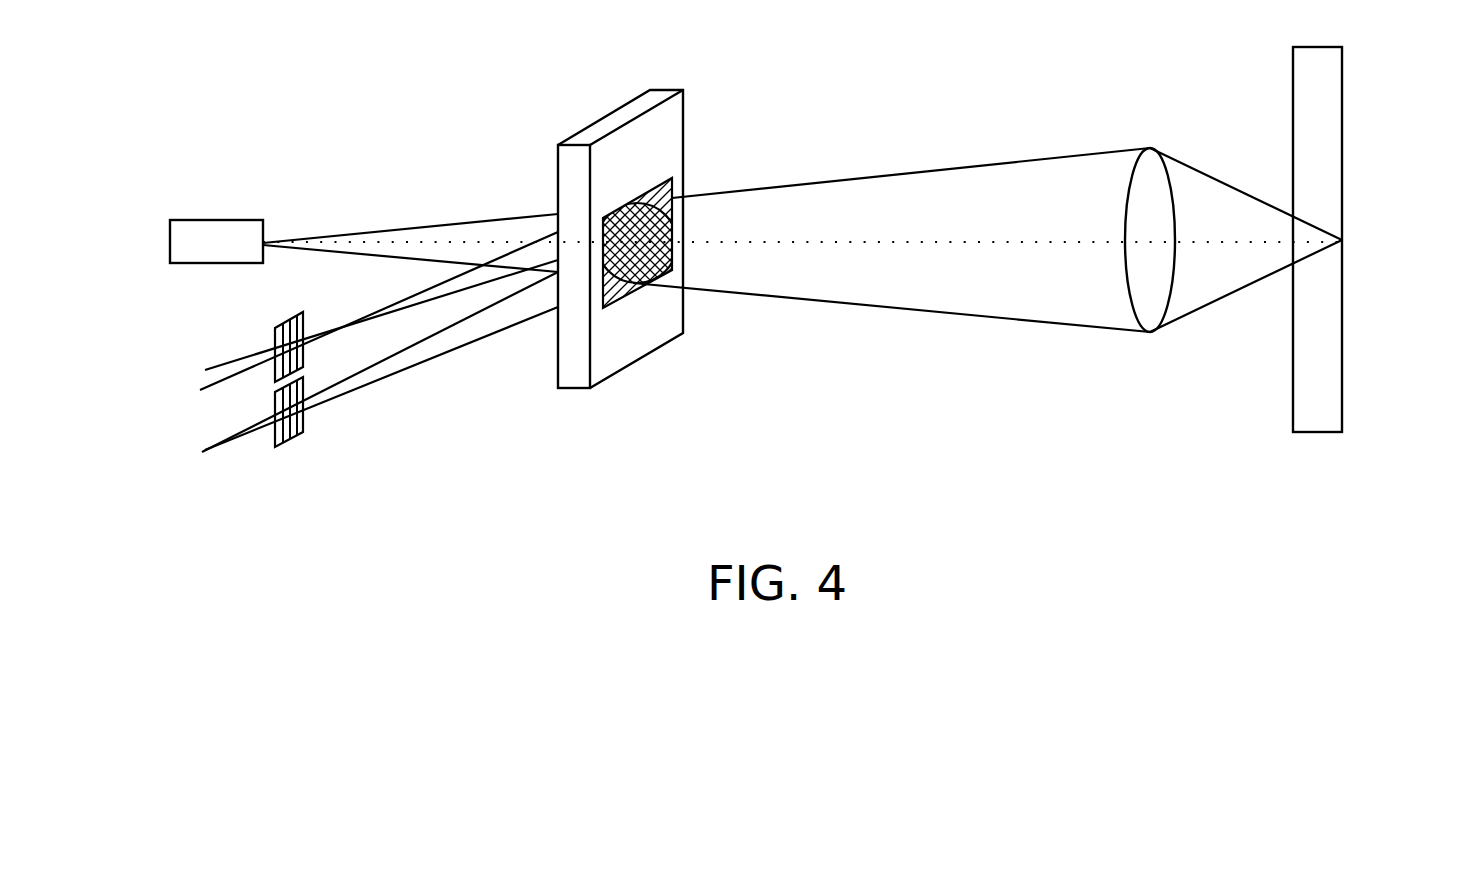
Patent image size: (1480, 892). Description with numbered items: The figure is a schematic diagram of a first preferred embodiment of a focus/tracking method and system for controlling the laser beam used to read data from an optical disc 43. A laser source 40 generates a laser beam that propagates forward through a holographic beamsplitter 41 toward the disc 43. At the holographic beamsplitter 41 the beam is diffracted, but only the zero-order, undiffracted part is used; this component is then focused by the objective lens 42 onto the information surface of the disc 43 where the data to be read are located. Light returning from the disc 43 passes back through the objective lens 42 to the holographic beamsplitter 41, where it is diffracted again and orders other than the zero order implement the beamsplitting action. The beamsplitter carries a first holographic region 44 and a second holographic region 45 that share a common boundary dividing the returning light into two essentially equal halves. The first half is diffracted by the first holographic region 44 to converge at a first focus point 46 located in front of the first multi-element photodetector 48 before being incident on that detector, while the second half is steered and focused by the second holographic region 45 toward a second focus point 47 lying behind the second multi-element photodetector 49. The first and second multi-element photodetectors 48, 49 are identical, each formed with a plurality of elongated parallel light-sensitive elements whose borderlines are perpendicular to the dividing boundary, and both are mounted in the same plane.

The laser source 40 is at (220, 220).
The holographic beamsplitter 41 is at (652, 125).
The objective lens 42 is at (1168, 173).
The optical disc 43 is at (1342, 88).
The first holographic region 44 is at (667, 187).
The second holographic region 45 is at (635, 267).
The first focus point 46 is at (347, 320).
The reference beam 47 is at (202, 452).
The first multi-element photodetector 48 is at (277, 322).
The second multi-element photodetector 49 is at (305, 418).